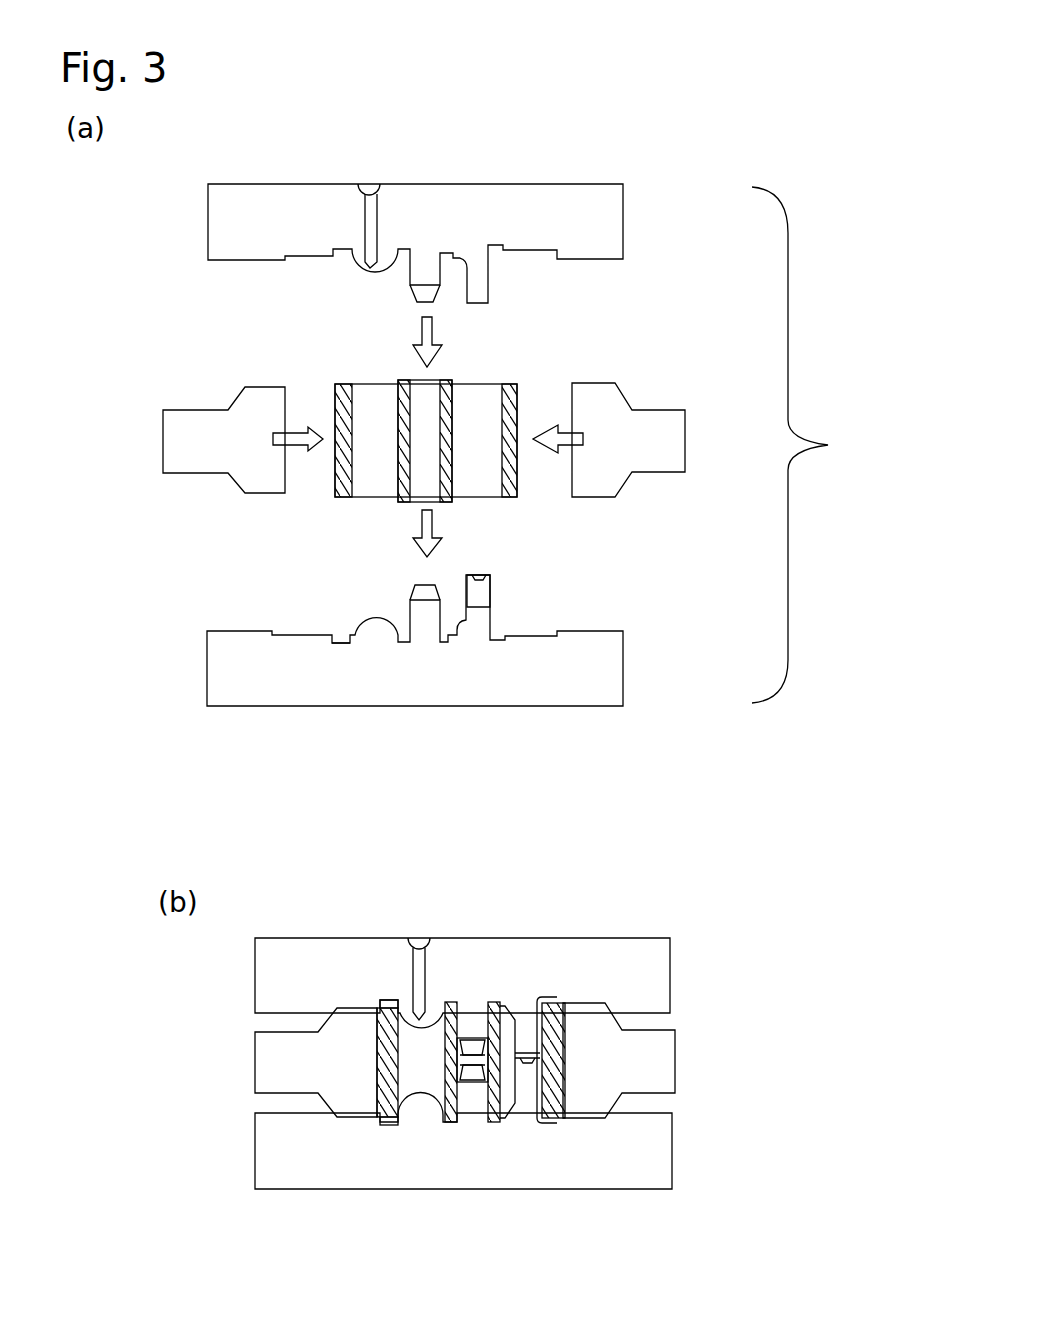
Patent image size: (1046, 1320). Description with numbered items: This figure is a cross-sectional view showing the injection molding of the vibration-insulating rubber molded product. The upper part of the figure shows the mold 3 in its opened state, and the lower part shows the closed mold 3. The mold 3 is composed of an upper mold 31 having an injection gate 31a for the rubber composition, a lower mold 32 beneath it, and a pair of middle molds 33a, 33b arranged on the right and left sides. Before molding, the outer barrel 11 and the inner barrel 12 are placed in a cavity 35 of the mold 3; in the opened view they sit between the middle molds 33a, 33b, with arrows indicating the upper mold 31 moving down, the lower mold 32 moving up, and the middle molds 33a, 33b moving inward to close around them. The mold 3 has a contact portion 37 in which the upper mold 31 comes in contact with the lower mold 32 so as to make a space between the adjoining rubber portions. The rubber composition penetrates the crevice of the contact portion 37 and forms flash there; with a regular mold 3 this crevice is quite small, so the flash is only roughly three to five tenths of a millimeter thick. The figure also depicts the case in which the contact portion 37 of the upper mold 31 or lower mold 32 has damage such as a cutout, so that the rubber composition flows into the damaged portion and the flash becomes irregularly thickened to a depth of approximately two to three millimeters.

The mold 3 is at (800, 445).
The outer barrel 11 is at (337, 481).
The inner barrel 12 is at (398, 494).
The upper mold 31 is at (610, 224).
The injection gate 31a is at (362, 270).
The lower mold 32 is at (613, 683).
The middle mold 33a is at (673, 448).
The middle mold 33b is at (175, 445).
The cavity 35 is at (342, 637).
The contact portion 37 is at (494, 572).